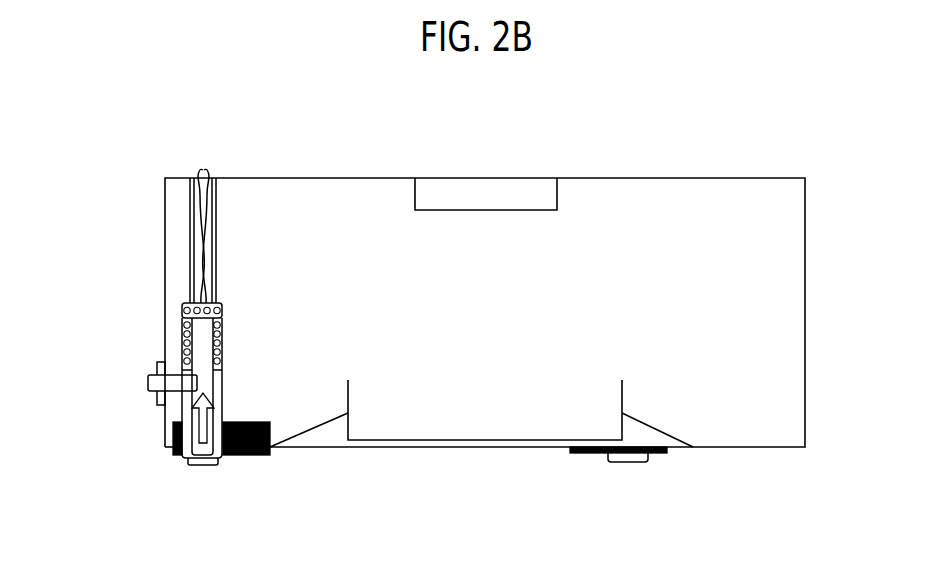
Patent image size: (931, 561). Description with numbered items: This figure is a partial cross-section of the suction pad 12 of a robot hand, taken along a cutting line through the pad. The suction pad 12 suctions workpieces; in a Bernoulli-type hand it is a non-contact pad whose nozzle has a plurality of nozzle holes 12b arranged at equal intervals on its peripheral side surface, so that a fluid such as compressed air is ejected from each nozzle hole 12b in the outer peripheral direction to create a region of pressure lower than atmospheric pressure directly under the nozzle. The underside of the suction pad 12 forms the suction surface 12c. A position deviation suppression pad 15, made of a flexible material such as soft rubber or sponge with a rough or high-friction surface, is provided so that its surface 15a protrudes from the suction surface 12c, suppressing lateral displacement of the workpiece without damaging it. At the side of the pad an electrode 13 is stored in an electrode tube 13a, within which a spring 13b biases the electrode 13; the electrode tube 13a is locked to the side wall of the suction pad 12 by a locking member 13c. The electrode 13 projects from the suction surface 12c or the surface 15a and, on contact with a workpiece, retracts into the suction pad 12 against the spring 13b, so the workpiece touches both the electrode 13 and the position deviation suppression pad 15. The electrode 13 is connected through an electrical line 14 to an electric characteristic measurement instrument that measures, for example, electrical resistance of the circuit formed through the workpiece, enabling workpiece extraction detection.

The suction pad 12 is at (688, 178).
The nozzle hole 12b is at (348, 433).
The suction surface 12c is at (460, 447).
The electrode 13 is at (237, 395).
The electrode tube 13a is at (223, 380).
The spring 13b is at (223, 312).
The locking member 13c is at (149, 383).
The electrical line 14 is at (208, 202).
The position deviation suppression pad 15 is at (420, 411).
The surface of position deviation suppression pad 15a is at (247, 455).